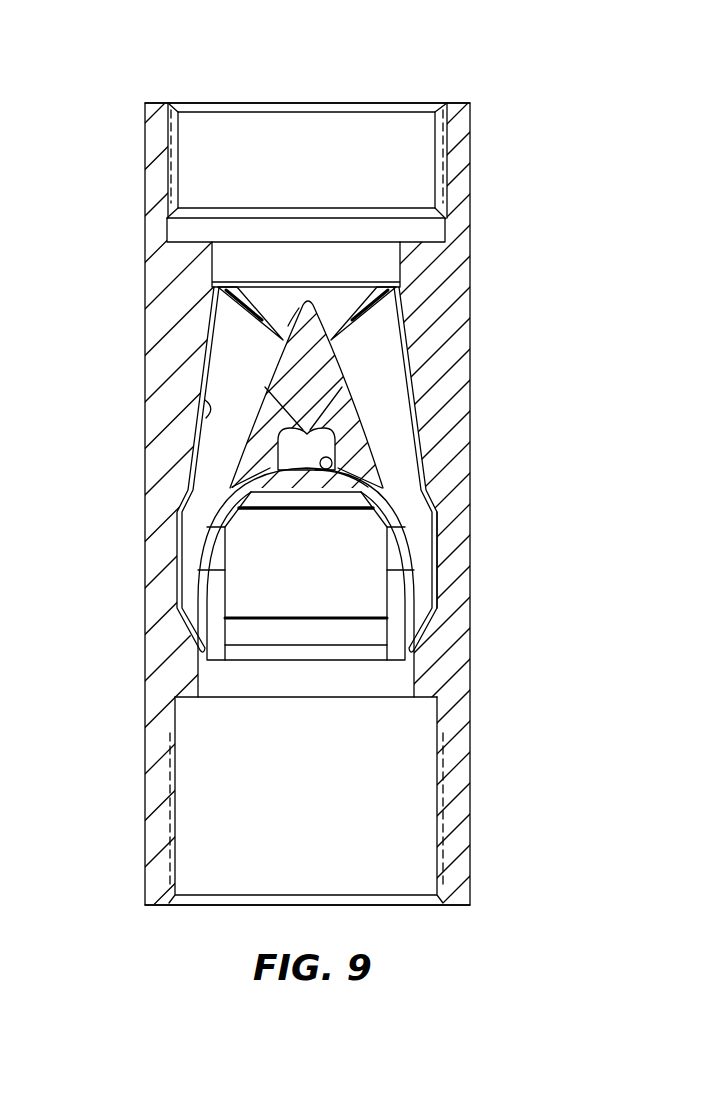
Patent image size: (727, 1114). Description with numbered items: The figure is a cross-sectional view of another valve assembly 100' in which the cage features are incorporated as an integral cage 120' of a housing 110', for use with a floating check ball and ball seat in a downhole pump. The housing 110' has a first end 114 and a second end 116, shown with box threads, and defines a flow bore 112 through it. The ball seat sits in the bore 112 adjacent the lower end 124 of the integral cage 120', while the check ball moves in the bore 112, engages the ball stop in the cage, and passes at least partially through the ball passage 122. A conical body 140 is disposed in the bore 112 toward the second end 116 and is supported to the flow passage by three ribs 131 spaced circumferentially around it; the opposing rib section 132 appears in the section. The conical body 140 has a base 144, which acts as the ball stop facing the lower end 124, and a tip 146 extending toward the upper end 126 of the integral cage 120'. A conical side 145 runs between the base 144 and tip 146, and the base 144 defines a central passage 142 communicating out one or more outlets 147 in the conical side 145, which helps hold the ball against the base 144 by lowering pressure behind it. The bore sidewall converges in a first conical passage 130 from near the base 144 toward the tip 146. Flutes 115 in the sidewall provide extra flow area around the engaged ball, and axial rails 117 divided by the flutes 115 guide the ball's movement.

The valve assembly 100' is at (329, 454).
The housing 110' is at (363, 557).
The flow bore 112 is at (366, 135).
The first end 114 is at (147, 827).
The flutes 115 is at (438, 555).
The second end 116 is at (145, 147).
The axial rails 117 is at (385, 597).
The integral cage 120' is at (378, 623).
The ball passage 122 is at (347, 627).
The lower end 124 is at (188, 698).
The upper end 126 is at (422, 240).
The first conical passage 130 is at (205, 400).
The ribs 131 is at (267, 305).
The second spring arm 132 is at (338, 337).
The conical body 140 is at (352, 372).
The central passage 142 is at (370, 490).
The base 144 is at (245, 493).
The conical side 145 is at (273, 355).
The tip 146 is at (305, 305).
The outlets 147 is at (365, 455).